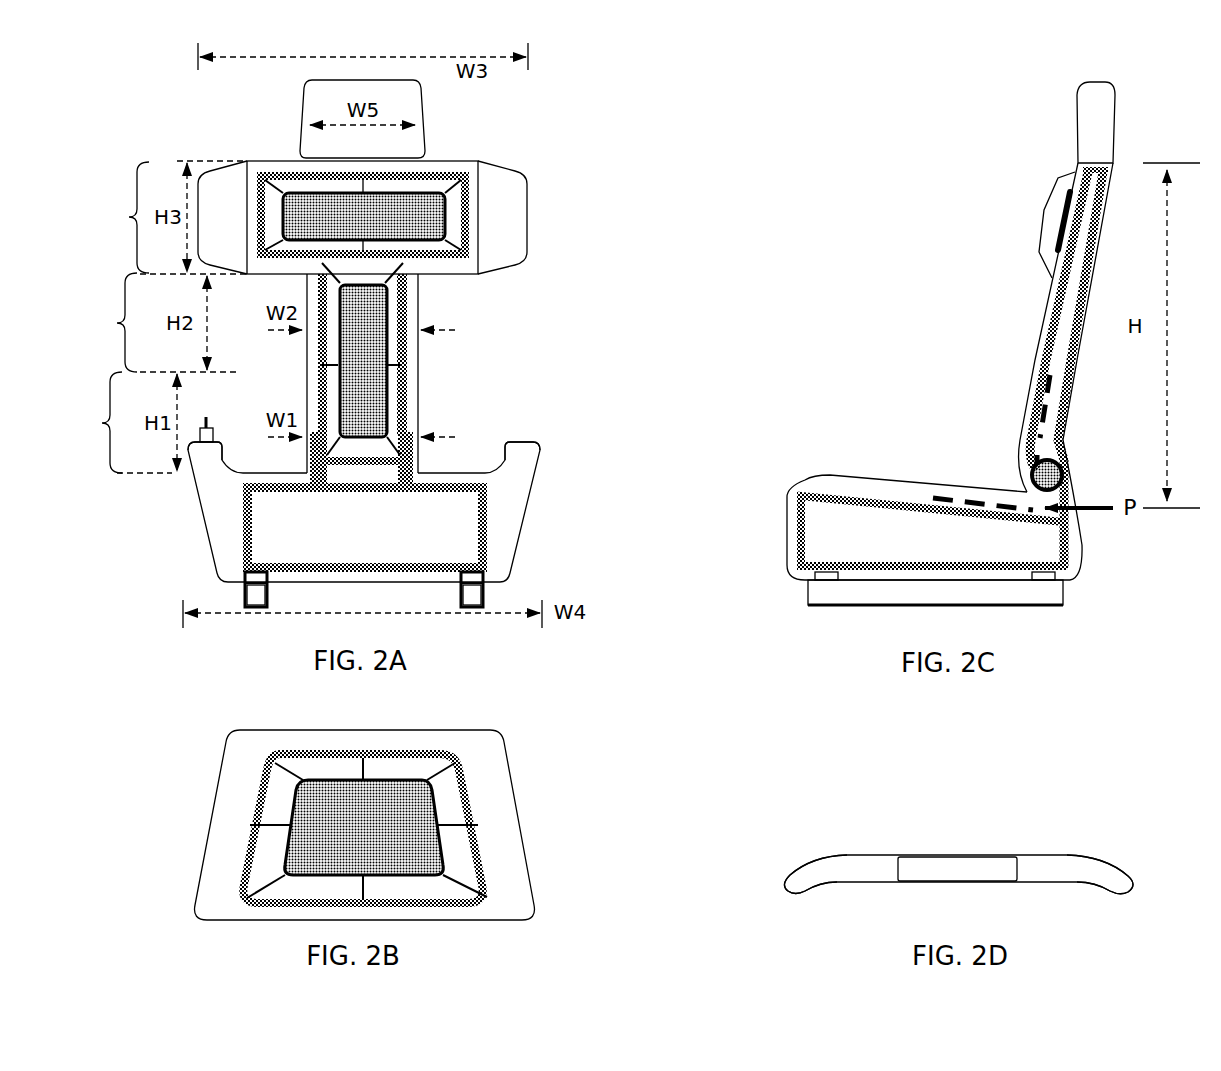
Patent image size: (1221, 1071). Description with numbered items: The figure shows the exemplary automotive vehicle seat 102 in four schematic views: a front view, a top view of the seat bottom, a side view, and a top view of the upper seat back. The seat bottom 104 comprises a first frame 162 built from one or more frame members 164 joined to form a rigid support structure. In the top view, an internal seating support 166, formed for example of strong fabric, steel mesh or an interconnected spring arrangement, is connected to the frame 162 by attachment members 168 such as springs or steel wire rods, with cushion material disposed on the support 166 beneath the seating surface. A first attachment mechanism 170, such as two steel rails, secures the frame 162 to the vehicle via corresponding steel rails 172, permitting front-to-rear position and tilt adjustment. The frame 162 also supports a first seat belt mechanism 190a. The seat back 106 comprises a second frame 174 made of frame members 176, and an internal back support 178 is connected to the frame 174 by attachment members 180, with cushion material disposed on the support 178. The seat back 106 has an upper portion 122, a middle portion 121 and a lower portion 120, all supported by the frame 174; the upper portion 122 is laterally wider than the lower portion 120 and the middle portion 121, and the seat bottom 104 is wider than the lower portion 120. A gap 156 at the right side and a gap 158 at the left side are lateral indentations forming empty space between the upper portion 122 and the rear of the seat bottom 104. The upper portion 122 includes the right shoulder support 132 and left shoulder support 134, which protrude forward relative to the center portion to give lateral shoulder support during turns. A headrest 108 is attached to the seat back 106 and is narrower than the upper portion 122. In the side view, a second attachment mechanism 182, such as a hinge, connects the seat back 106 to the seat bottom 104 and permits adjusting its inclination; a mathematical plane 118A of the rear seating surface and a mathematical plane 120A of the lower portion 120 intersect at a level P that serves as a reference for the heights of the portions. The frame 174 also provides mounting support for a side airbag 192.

In FIG. 2A, the automotive vehicle seat 102 is at (278, 120).
In FIG. 2A, the seat bottom 104 is at (550, 503).
In FIG. 2C, the seat bottom 104 is at (1102, 547).
In FIG. 2A, the seat back 106 is at (560, 290).
In FIG. 2C, the seat back 106 is at (974, 327).
In FIG. 2D, the seat back 106 is at (1048, 852).
In FIG. 2A, the headrest 108 is at (423, 128).
In FIG. 2C, the headrest 108 is at (1083, 130).
In FIG. 2D, the headrest 108 is at (922, 870).
In FIG. 2C, the mathematical plane representative of a rear portion of the seating surface 118A is at (943, 498).
In FIG. 2A, the lower portion 120 is at (102, 423).
In FIG. 2C, the mathematical plane representative of the lower portion of the seat back 120A is at (1035, 425).
In FIG. 2A, the middle portion 121 is at (113, 323).
In FIG. 2A, the upper portion 122 is at (125, 217).
In FIG. 2A, the right shoulder support 132 is at (220, 180).
In FIG. 2D, the right shoulder support 132 is at (802, 880).
In FIG. 2A, the left shoulder support 134 is at (512, 180).
In FIG. 2C, the left shoulder support 134 is at (1048, 233).
In FIG. 2D, the left shoulder support 134 is at (1110, 877).
In FIG. 2A, the gap 156 is at (270, 377).
In FIG. 2A, the gap 158 is at (448, 353).
In FIG. 2A, the frame 162 is at (241, 518).
In FIG. 2B, the frame 162 is at (243, 830).
In FIG. 2C, the frame 162 is at (795, 553).
In FIG. 2A, the frame members 164 is at (408, 455).
In FIG. 2B, the frame members 164 is at (408, 752).
In FIG. 2B, the internal seating support 166 is at (405, 822).
In FIG. 2B, the attachment members 168 is at (363, 768).
In FIG. 2A, the first attachment mechanism 170 is at (247, 578).
In FIG. 2A, the steel rails 172 is at (467, 593).
In FIG. 2A, the frame 174 is at (409, 378).
In FIG. 2C, the frame 174 is at (1050, 300).
In FIG. 2A, the frame members 176 is at (470, 218).
In FIG. 2A, the internal back support 178 is at (413, 222).
In FIG. 2A, the attachment members 180 is at (340, 283).
In FIG. 2C, the second attachment mechanism 182 is at (1063, 473).
In FIG. 2A, the first seat belt mechanism 190a is at (208, 447).
In FIG. 2C, the side airbag 192 is at (1058, 218).